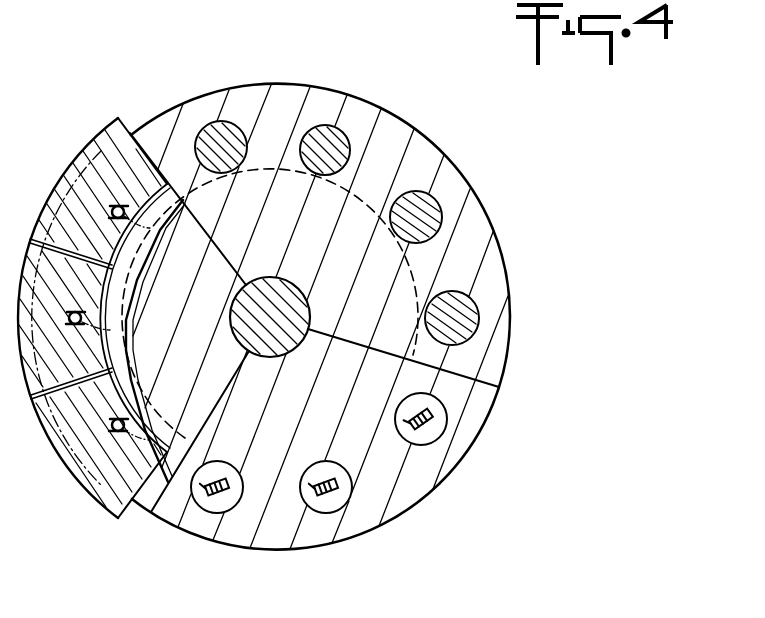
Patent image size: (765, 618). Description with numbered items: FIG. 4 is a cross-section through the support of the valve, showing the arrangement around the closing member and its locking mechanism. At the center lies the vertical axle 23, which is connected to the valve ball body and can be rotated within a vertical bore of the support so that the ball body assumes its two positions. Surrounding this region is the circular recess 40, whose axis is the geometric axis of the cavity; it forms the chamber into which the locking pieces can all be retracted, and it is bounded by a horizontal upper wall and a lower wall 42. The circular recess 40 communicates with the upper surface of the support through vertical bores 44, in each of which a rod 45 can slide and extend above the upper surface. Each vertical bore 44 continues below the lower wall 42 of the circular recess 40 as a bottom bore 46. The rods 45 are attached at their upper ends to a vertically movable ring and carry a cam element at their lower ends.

The vertical axle 23 is at (275, 300).
The circular recess 40 is at (141, 512).
The lower wall 42 is at (150, 512).
The vertical bore 44 is at (322, 126).
The rod 45 is at (331, 150).
The bottom bore 46 is at (432, 430).